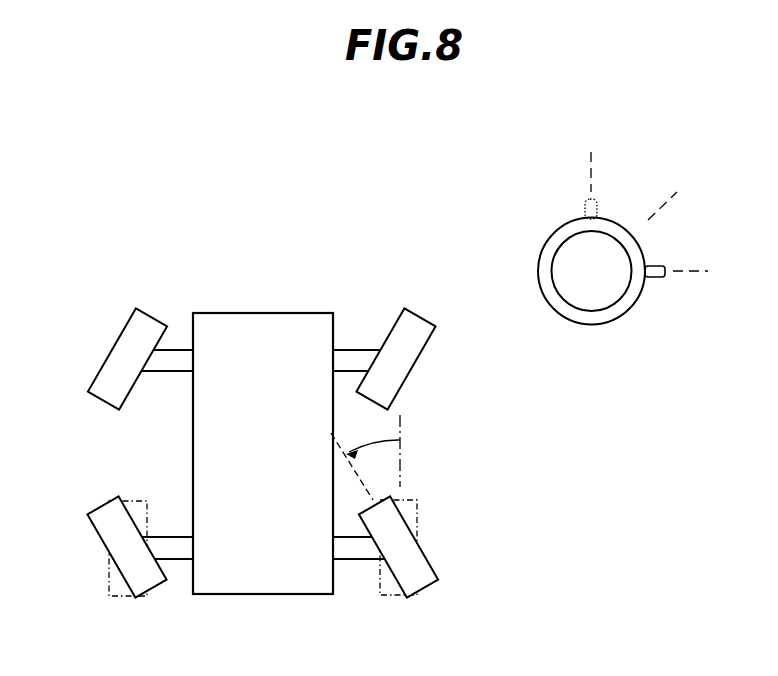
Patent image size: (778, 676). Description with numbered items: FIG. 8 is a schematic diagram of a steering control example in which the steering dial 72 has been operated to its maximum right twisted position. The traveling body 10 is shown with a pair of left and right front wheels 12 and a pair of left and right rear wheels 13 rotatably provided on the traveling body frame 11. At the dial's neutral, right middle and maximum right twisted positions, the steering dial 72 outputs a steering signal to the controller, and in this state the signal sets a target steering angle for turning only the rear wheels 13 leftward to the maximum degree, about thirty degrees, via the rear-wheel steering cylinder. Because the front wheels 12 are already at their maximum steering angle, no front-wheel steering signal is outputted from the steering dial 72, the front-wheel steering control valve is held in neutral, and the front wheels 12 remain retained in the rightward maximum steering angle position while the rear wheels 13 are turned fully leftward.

The traveling body 10 is at (270, 266).
The traveling body frame 11 is at (290, 595).
The front wheels 12 is at (102, 362).
The rear wheels 13 is at (98, 535).
The steering dial 72 is at (529, 212).